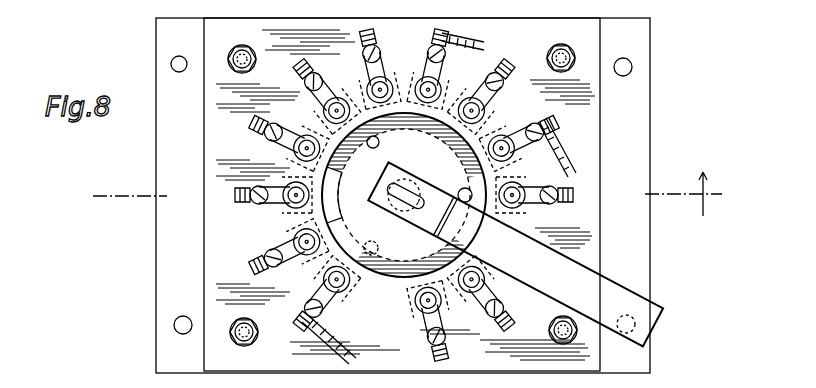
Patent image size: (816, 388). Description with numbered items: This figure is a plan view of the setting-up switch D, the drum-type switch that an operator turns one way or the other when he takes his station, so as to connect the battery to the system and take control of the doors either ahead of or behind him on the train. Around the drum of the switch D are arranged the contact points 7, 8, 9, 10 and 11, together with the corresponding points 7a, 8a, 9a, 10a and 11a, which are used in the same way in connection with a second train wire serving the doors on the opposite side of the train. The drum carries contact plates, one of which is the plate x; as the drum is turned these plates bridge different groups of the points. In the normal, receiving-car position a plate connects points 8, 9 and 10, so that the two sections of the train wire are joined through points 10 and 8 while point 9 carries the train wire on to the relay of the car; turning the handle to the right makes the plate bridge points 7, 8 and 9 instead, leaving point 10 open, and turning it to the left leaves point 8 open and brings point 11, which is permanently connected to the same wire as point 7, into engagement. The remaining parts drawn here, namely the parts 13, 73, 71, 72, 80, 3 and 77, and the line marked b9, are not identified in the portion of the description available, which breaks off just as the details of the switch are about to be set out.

The setting-up switch D is at (389, 195).
The fastening bolt 13 is at (255, 195).
The fastening bolt 73 is at (517, 195).
The rotary disc 71 is at (404, 195).
The contact ring 72 is at (405, 195).
The operating handle 80 is at (515, 254).
The cover outline 3 is at (282, 168).
The contact point 8 is at (288, 201).
The contact point 9 is at (305, 136).
The contact point 10 is at (337, 98).
The contact point 11 is at (385, 77).
The contact point 7a is at (436, 86).
The contact point 8a is at (479, 106).
The contact point 9a is at (511, 152).
The contact point 10a is at (514, 201).
The contact point 11a is at (484, 283).
The contact terminal 77 is at (398, 278).
The contact plate x is at (370, 298).
The contact point 7 is at (306, 251).
The section line b9 is at (404, 194).